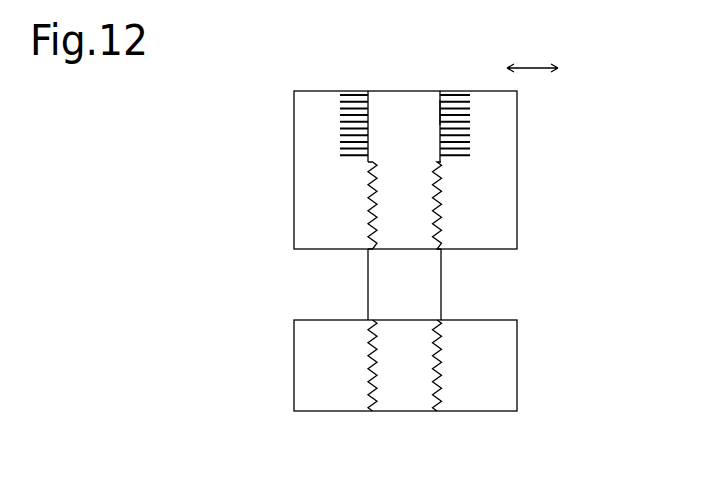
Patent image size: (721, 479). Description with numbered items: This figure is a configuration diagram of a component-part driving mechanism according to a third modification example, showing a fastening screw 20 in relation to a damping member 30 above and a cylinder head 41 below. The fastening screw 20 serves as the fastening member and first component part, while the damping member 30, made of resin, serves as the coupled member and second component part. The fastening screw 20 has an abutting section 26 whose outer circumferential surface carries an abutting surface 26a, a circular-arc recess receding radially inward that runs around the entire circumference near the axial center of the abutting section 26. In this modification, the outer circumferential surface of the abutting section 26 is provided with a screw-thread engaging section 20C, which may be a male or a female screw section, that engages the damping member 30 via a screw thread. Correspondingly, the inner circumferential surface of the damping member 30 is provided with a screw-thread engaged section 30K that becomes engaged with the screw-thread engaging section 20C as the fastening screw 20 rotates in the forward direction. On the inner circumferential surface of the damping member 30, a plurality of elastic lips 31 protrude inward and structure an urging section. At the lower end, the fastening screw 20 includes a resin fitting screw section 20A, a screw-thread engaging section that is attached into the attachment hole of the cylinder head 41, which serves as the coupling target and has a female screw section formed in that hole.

The fastening screw 20 is at (441, 292).
The fitting screw section 20A is at (438, 388).
The screw-thread engaging section 20C is at (372, 240).
The abutting section 26 is at (385, 100).
The abutting surface 26a is at (445, 108).
The damping member 30 is at (517, 170).
The screw-thread engaged section 30K is at (435, 240).
The elastic lips 31 is at (355, 93).
The cylinder head 41 is at (517, 366).